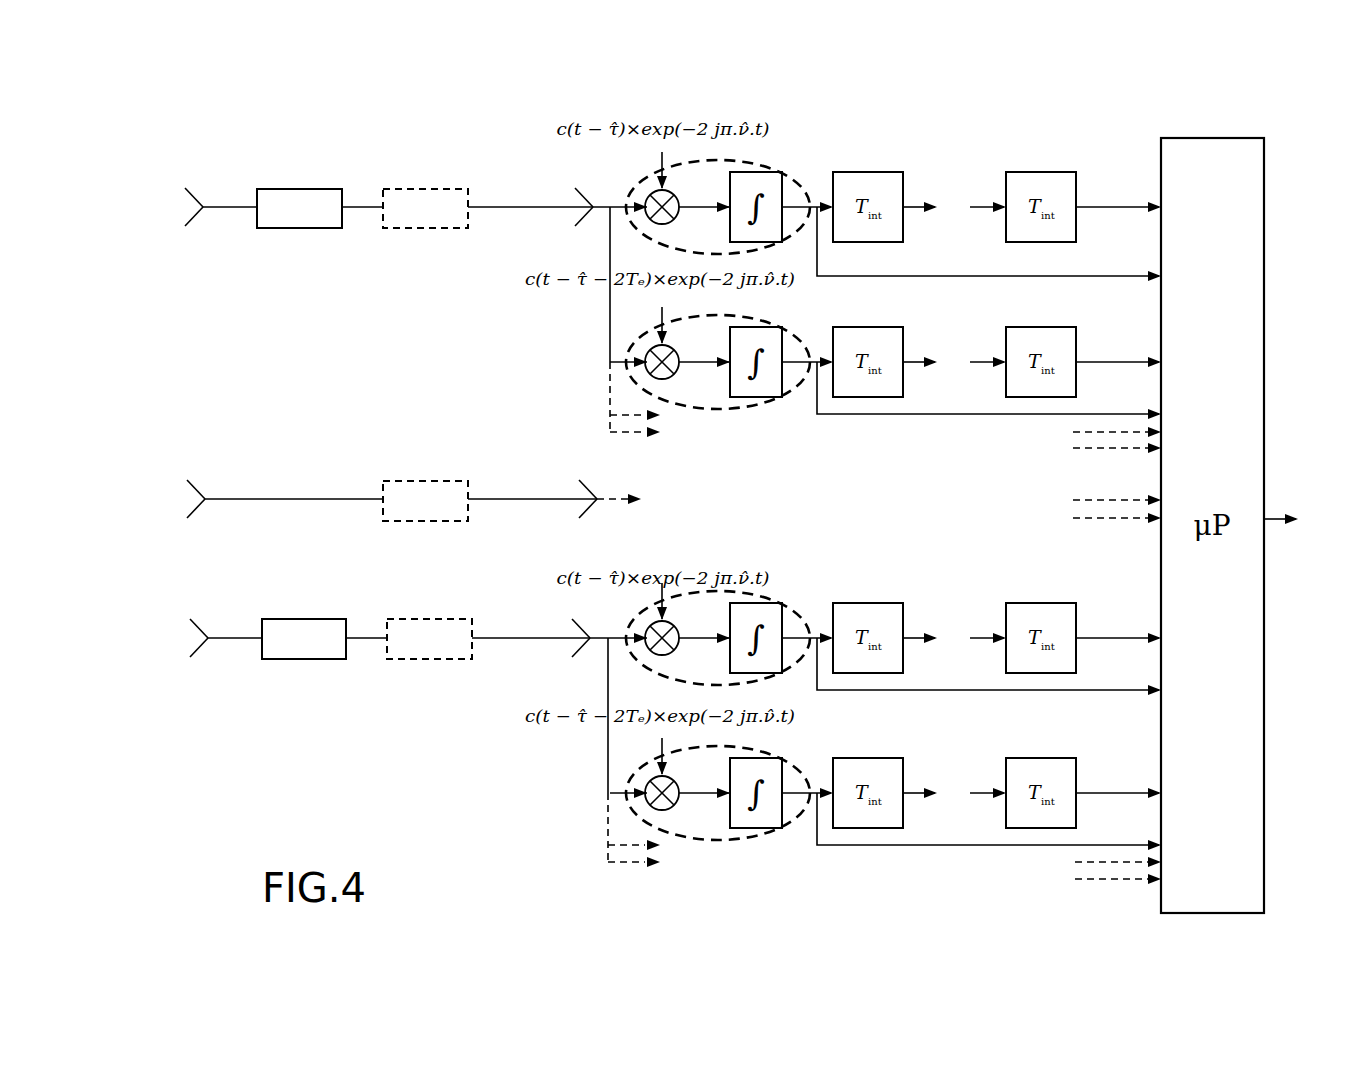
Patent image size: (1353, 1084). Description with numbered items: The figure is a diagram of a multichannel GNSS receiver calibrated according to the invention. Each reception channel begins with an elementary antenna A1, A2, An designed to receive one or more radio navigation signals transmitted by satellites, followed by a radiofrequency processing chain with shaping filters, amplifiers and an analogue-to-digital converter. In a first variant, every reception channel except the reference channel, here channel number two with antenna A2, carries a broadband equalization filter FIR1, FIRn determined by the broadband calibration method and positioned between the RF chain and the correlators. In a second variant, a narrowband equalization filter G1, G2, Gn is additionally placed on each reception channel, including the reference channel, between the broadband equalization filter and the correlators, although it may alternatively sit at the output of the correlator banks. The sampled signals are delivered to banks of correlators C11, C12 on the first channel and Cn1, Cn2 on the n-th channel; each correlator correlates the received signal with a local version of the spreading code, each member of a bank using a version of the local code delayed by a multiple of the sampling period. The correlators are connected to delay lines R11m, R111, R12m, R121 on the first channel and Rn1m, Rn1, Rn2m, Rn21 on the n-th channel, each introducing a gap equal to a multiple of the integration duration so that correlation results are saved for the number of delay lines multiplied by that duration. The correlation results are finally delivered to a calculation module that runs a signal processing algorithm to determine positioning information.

The elementary antenna A1 is at (190, 216).
The elementary antenna A2 is at (190, 513).
The elementary antenna An is at (190, 648).
The broadband equalization filter FIR1 is at (313, 190).
The broadband equalization filter FIRn is at (317, 620).
The narrowband equalization filter G1 is at (423, 188).
The narrowband equalization filter G2 is at (425, 478).
The narrowband equalization filter Gn is at (428, 620).
The correlator C11 is at (796, 162).
The correlator C12 is at (734, 414).
The correlator Cn1 is at (787, 588).
The correlator Cn2 is at (728, 842).
The delay line R11m is at (1120, 207).
The delay line R111 is at (1122, 276).
The delay line R12m is at (1112, 362).
The delay line R121 is at (938, 414).
The delay line Rn1m is at (1125, 638).
The delay line Rn1 is at (1107, 690).
The delay line Rn2m is at (1115, 793).
The delay line Rn21 is at (1028, 845).